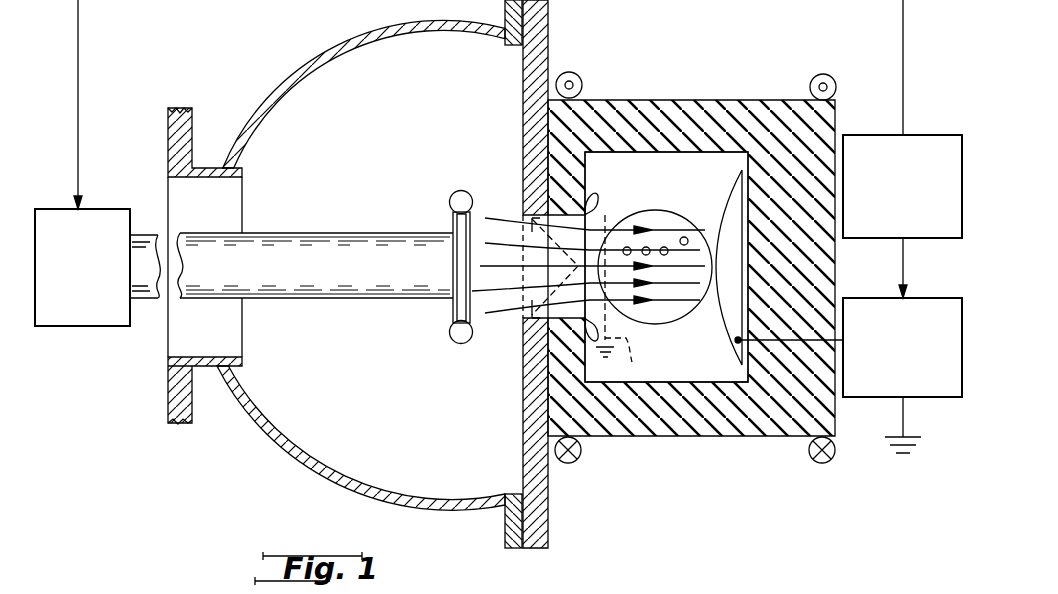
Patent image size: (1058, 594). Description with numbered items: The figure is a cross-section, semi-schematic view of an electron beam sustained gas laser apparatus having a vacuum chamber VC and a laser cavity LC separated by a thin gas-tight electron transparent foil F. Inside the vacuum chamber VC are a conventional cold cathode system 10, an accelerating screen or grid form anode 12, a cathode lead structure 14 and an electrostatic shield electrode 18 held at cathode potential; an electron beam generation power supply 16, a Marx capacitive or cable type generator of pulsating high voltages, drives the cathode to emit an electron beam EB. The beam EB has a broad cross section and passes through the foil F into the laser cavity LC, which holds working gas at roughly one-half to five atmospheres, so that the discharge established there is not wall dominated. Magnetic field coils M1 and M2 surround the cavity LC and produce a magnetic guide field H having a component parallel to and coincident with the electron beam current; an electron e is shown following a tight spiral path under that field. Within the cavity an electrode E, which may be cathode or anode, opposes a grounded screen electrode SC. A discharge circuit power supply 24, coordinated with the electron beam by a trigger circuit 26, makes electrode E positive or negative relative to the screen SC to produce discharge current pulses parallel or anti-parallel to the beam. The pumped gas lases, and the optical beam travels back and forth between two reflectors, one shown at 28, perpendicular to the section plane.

The cold cathode system 10 is at (462, 191).
The accelerating screen or grid form anode 12 is at (522, 213).
The cathode lead structure 14 is at (355, 299).
The electron beam generation power supply 16 is at (92, 327).
The electrostatic shield electrode 18 is at (456, 343).
The discharge circuit power supply 24 is at (932, 298).
The trigger circuit 26 is at (924, 135).
The reflector 28 is at (637, 210).
The vacuum chamber VC is at (403, 124).
The magnetic field coil M1 is at (578, 73).
The magnetic field coil M2 is at (829, 74).
The laser cavity LC is at (716, 174).
The electron beam EB is at (520, 305).
The electron transparent foil F is at (605, 215).
The screen electrode SC is at (619, 360).
The electron e is at (686, 238).
The magnetic guide field H is at (663, 303).
The electrode E is at (724, 340).